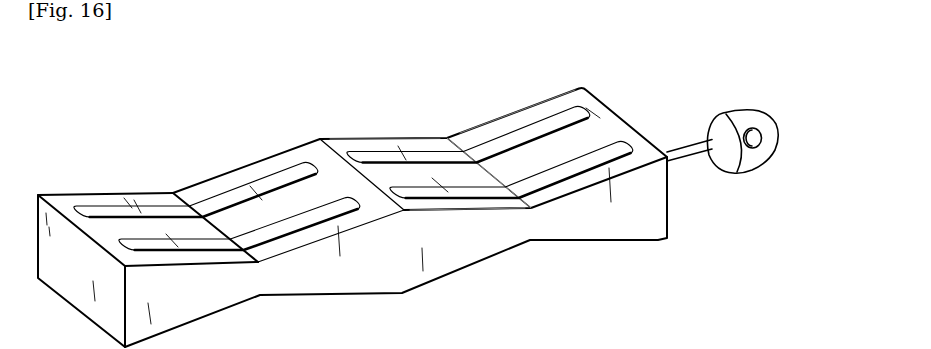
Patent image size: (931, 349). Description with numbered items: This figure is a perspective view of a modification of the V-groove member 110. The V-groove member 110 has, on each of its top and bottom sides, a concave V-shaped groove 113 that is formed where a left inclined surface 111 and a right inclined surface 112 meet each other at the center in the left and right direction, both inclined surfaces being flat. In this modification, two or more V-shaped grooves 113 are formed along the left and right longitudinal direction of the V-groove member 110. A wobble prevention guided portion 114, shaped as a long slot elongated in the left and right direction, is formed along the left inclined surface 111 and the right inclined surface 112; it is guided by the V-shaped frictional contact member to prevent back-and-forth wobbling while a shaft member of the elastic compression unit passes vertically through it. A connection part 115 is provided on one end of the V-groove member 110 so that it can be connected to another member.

The V-groove member 110 is at (74, 185).
The left inclined surface 111 is at (382, 147).
The right inclined surface 112 is at (520, 117).
The V-shaped groove 113 is at (462, 139).
The wobble prevention guided portion 114 is at (555, 120).
The connection part 115 is at (695, 155).